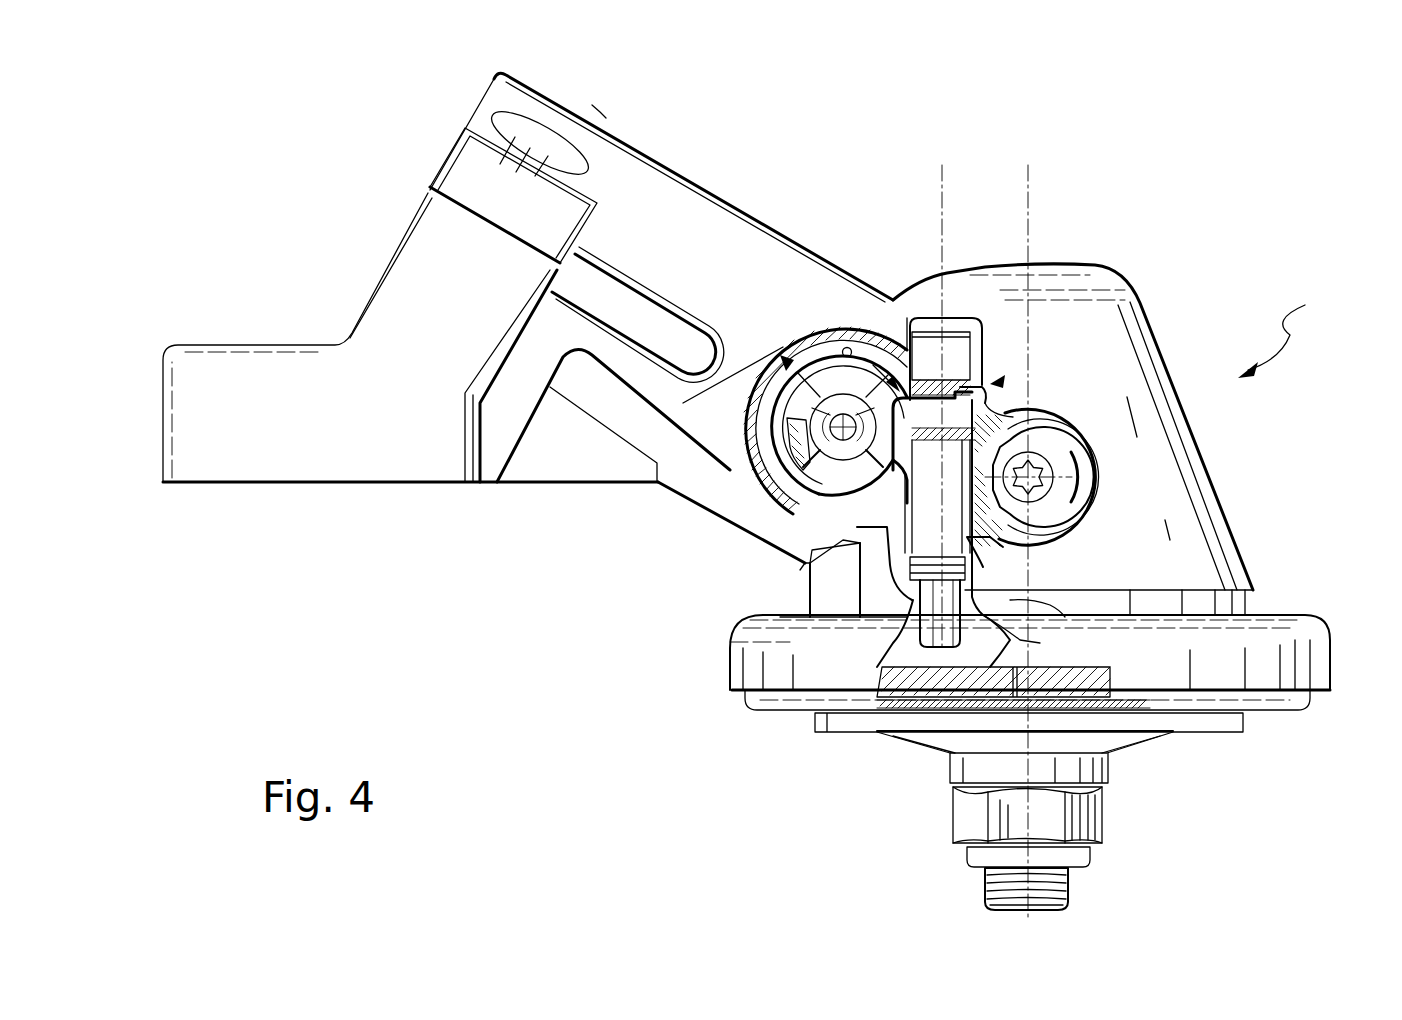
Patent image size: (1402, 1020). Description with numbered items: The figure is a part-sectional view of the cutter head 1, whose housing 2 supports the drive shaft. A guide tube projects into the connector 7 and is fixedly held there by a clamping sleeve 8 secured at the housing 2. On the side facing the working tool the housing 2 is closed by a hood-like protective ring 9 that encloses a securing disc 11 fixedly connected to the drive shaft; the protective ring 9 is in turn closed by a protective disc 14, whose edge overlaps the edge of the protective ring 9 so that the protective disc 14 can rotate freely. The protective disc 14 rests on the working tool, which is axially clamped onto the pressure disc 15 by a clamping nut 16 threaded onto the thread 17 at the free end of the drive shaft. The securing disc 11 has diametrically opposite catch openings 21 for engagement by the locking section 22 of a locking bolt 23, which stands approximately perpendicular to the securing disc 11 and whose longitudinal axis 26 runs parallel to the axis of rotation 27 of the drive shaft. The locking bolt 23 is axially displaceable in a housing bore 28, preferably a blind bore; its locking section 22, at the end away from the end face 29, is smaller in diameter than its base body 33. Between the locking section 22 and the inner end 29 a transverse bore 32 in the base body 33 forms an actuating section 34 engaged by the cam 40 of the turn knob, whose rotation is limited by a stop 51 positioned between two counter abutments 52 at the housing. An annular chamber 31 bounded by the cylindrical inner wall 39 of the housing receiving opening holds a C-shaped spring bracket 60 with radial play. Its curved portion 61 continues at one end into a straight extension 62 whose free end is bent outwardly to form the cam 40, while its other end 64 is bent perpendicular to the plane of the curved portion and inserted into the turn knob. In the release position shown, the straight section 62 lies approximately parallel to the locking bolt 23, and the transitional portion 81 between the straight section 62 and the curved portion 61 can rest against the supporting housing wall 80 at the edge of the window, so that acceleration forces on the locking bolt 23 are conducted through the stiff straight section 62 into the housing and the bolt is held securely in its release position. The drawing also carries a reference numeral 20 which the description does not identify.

The cutter head 1 is at (1278, 325).
The housing 2 is at (1095, 280).
The connector 7 is at (678, 198).
The clamping sleeve 8 is at (430, 213).
The protective ring 9 is at (1310, 632).
The securing disc 11 is at (913, 687).
The protective disc 14 is at (1275, 705).
The pressure disc 15 is at (1140, 745).
The clamping nut 16 is at (970, 817).
The thread 17 is at (1068, 884).
The fastening screw 20 is at (1058, 463).
The catch opening 21 is at (1043, 685).
The locking section 22 is at (923, 628).
The locking bolt 23 is at (1003, 583).
The longitudinal axis 26 is at (942, 205).
The axis of rotation 27 is at (1028, 205).
The housing bore 28 is at (855, 543).
The end face 29 is at (952, 345).
The annular chamber 31 is at (822, 480).
The transverse bore 32 is at (1003, 403).
The base body 33 is at (993, 520).
The actuating section 34 is at (1003, 380).
The cylindrical inner wall 39 is at (780, 473).
The cam 40 is at (892, 348).
The stop 51 is at (790, 440).
The counter abutment 52 is at (878, 345).
The spring bracket 60 is at (785, 362).
The curved portion 61 is at (835, 352).
The straight extension 62 is at (993, 350).
The other end 64 is at (843, 347).
The supporting housing wall 80 is at (805, 563).
The transitional portion 81 is at (915, 490).